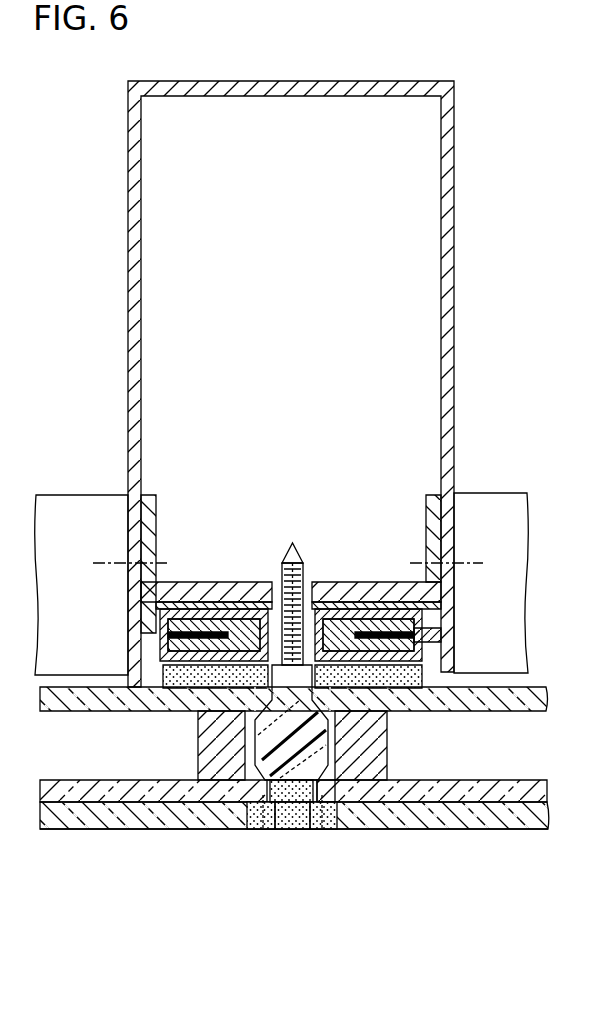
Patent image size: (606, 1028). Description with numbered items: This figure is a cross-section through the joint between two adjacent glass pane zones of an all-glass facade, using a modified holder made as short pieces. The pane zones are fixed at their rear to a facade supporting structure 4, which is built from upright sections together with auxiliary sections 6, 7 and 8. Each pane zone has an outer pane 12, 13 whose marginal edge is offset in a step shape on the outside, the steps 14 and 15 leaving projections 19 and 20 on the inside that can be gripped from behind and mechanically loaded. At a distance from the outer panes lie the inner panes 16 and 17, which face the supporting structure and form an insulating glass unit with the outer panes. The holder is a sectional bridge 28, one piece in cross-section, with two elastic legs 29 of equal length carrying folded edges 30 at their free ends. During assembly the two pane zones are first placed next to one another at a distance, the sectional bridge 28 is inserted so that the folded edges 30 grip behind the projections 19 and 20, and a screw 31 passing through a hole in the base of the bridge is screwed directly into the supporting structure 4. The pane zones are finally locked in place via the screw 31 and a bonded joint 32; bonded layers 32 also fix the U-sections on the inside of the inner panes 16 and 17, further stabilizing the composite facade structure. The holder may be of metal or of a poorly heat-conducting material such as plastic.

The facade supporting structure 4 is at (455, 318).
The auxiliary section 6 is at (138, 538).
The inner pane 16 is at (494, 694).
The auxiliary section 8 is at (447, 605).
The auxiliary section 7 is at (443, 636).
The bonded joint 32 is at (196, 700).
The screw 31 is at (298, 553).
The sectional bridge 28 is at (322, 752).
The inner pane 17 is at (87, 700).
The projection 20 is at (234, 796).
The step 15 is at (258, 818).
The projection 19 is at (352, 808).
The outer pane 12 is at (480, 827).
The outer pane 13 is at (101, 829).
The elastic leg 29 is at (294, 828).
The folded edge 30 is at (270, 831).
The step 14 is at (345, 812).